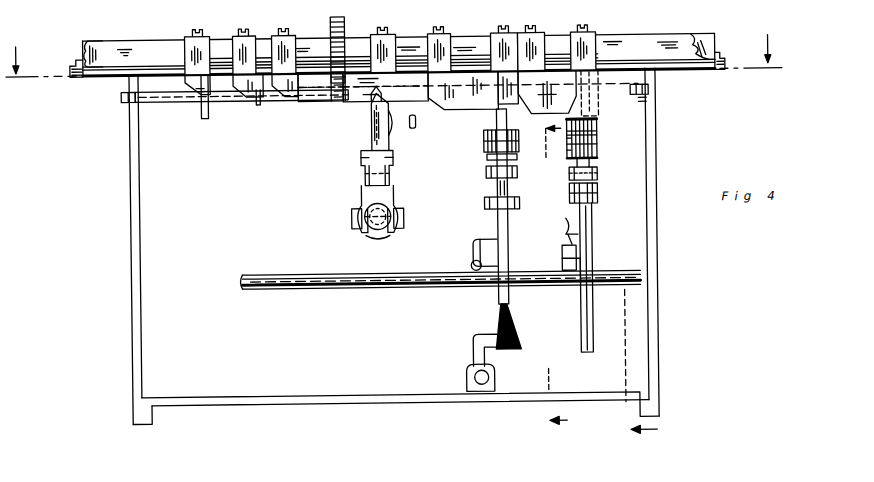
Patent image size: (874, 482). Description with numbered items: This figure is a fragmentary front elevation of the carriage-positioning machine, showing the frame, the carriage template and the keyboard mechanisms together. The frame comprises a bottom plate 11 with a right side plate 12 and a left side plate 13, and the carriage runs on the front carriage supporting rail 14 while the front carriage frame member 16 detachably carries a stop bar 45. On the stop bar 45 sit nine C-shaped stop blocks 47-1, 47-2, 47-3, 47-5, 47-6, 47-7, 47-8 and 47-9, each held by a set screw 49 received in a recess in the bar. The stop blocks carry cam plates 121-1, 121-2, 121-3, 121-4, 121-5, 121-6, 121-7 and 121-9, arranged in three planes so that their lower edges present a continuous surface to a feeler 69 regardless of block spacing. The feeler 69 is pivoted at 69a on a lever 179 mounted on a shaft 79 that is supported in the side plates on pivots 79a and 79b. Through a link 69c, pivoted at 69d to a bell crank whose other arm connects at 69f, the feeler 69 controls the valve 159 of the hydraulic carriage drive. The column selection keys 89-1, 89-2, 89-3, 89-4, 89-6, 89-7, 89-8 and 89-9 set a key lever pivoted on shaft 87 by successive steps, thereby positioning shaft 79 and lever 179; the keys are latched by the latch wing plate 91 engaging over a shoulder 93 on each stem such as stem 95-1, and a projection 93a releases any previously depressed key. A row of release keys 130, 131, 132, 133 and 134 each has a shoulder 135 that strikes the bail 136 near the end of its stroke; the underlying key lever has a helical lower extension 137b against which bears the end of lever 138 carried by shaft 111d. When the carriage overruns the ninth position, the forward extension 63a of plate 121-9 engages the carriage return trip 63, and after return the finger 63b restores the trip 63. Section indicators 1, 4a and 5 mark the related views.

The section line 1 is at (648, 364).
The section line 4a is at (568, 278).
The section line 5- 5 is at (393, 48).
The bottom plate 11 is at (241, 394).
The right side plate 12 is at (657, 340).
The left side plate 13 is at (140, 292).
The front carriage supporting rail 14 is at (78, 59).
The front carriage frame member 16 is at (96, 48).
The stop bar 45 is at (399, 54).
The stop block 47-1 is at (191, 36).
The stop block 47-2 is at (241, 36).
The stop block 47-3 is at (281, 36).
The stop block 47-5 is at (390, 36).
The stop block 47-6 is at (445, 36).
The stop block 47-7 is at (510, 36).
The stop block 47-8 is at (536, 36).
The stop block 47-9 is at (592, 44).
The set screw 49 is at (200, 26).
The carriage return trip 63 is at (414, 128).
The forward extension 63a is at (650, 106).
The finger 63b is at (203, 116).
The feeler 69 is at (388, 148).
The pivot 69a is at (394, 120).
The link 69c is at (362, 160).
The pivot 69d is at (367, 176).
The pivot 69f is at (354, 219).
The shaft 79 is at (172, 104).
The pivot 79a is at (124, 95).
The pivot 79b is at (652, 96).
The shaft 87 is at (312, 273).
The column selection key 89-1 is at (598, 194).
The column selection key 89-2 is at (570, 194).
The column selection key 89-3 is at (570, 176).
The column selection key 89-4 is at (598, 174).
The column selection key 89-6 is at (598, 158).
The column selection key 89-7 is at (598, 140).
The column selection key 89-8 is at (568, 148).
The column selection key 89-9 is at (598, 121).
The latch wing plate 91 is at (562, 256).
The shoulder 93 is at (566, 224).
The projection 93a is at (570, 240).
The key stem 95-1 is at (592, 240).
The shaft 111d is at (466, 377).
The cam plate 121-1 is at (212, 100).
The cam plate 121-2 is at (255, 100).
The cam plate 121-3 is at (298, 102).
The cam plate 121-4 is at (355, 101).
The cam plate 121-5 is at (374, 101).
The cam plate 121-6 is at (486, 110).
The cam plate 121-7 is at (518, 100).
The cam plate 121-9 is at (645, 81).
The Vert. key 130 is at (485, 205).
The Main Motor Bar key 131 is at (496, 186).
The Skip 1 key 132 is at (487, 172).
The Skip 2 key 133 is at (488, 158).
The Skip 3 key 134 is at (485, 140).
The shoulder 135 is at (481, 240).
The bail 136 is at (478, 263).
The lower extension 137b is at (521, 343).
The lever 138 is at (475, 336).
The valve 159 is at (378, 229).
The lever 179 is at (370, 150).